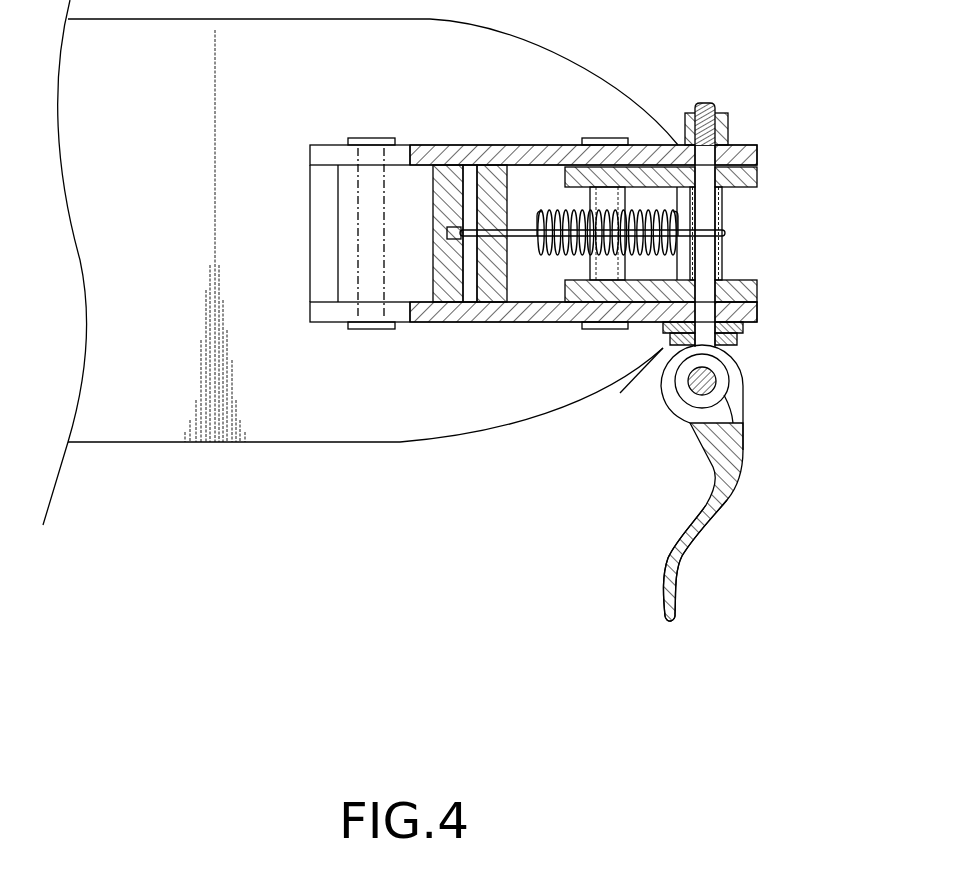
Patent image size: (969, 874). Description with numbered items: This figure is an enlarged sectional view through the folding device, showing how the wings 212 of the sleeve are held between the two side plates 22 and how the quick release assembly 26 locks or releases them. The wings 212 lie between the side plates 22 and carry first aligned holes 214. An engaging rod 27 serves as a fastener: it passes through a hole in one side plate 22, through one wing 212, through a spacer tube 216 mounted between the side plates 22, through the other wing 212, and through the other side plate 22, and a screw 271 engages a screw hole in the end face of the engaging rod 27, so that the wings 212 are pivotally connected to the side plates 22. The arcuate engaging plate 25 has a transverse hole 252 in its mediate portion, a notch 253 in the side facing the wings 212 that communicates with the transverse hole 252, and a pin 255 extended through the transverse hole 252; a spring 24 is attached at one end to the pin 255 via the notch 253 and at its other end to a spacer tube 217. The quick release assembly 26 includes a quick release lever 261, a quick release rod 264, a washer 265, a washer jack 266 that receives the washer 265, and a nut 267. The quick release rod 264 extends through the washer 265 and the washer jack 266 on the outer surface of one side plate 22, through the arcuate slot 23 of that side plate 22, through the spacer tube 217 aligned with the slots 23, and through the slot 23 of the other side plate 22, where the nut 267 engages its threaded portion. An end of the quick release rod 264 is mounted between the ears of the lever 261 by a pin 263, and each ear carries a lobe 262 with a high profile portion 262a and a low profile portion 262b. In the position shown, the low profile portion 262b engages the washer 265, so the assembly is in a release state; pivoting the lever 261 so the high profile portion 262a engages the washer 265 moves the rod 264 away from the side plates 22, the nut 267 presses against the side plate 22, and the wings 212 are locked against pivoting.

The side plate 22 is at (750, 313).
The wing 212 is at (757, 290).
The first aligned hole 214 is at (730, 280).
The spacer tube 217 is at (722, 192).
The spacer tube 216 is at (590, 262).
The arcuate slot 23 is at (658, 356).
The spring 24 is at (540, 257).
The engaging plate 25 is at (398, 183).
The transverse hole 252 is at (478, 220).
The notch 253 is at (550, 200).
The pin 255 is at (470, 173).
The quick release assembly 26 is at (671, 484).
The quick release lever 261 is at (740, 500).
The lobe 262 is at (662, 365).
The high profile portion 262a is at (669, 402).
The low profile portion 262b is at (748, 408).
The pin 263 is at (741, 468).
The quick release rod 264 is at (720, 222).
The washer 265 is at (738, 347).
The washer jack 266 is at (745, 335).
The nut 267 is at (728, 125).
The engaging rod 27 is at (368, 330).
The screw 271 is at (370, 138).